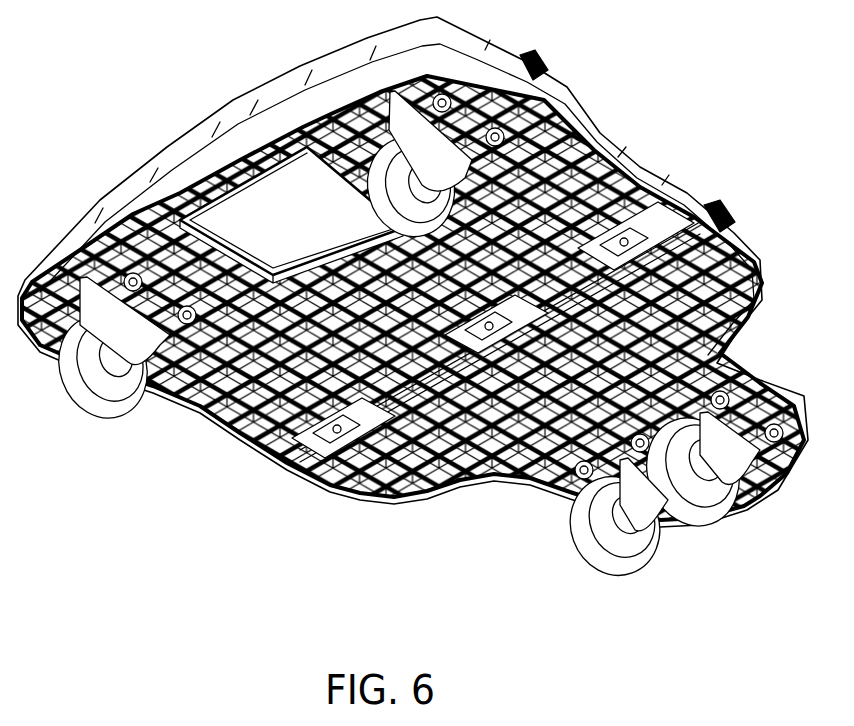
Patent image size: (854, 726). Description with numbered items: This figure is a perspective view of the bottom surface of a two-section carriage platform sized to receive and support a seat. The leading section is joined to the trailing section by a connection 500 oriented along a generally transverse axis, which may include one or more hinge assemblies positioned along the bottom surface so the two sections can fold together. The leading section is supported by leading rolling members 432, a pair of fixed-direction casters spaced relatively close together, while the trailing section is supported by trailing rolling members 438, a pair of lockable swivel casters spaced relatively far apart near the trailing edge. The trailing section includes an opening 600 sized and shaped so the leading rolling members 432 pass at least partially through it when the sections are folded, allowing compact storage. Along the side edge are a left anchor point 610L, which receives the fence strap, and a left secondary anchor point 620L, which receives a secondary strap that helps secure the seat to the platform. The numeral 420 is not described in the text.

The connection 500 is at (265, 482).
The frame rim 420 is at (382, 48).
The opening 600 is at (302, 225).
The left anchor point 610L is at (544, 63).
The left secondary anchor point 620L is at (732, 216).
The trailing rolling members 438 is at (380, 173).
The leading rolling members 432 is at (704, 523).